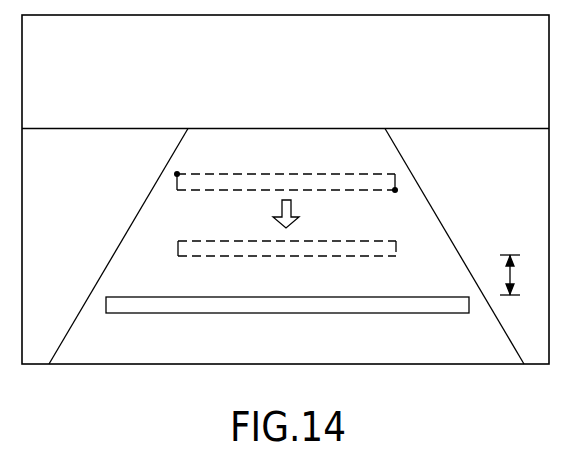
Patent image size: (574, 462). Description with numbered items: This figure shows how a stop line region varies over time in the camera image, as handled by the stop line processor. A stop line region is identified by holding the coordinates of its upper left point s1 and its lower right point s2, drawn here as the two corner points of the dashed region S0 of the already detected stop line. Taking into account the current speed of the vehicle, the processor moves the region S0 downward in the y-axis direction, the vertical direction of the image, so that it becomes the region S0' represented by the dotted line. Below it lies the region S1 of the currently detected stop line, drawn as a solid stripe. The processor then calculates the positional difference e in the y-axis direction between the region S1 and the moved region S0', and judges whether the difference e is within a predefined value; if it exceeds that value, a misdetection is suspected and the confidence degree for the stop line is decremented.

The upper left point s1 is at (177, 174).
The region of the already detected stop line S0 is at (257, 170).
The region of the stop line after movement S0' is at (244, 224).
The lower right point s2 is at (395, 190).
The region of the currently detected stop line S1 is at (106, 305).
The positional difference e is at (515, 275).